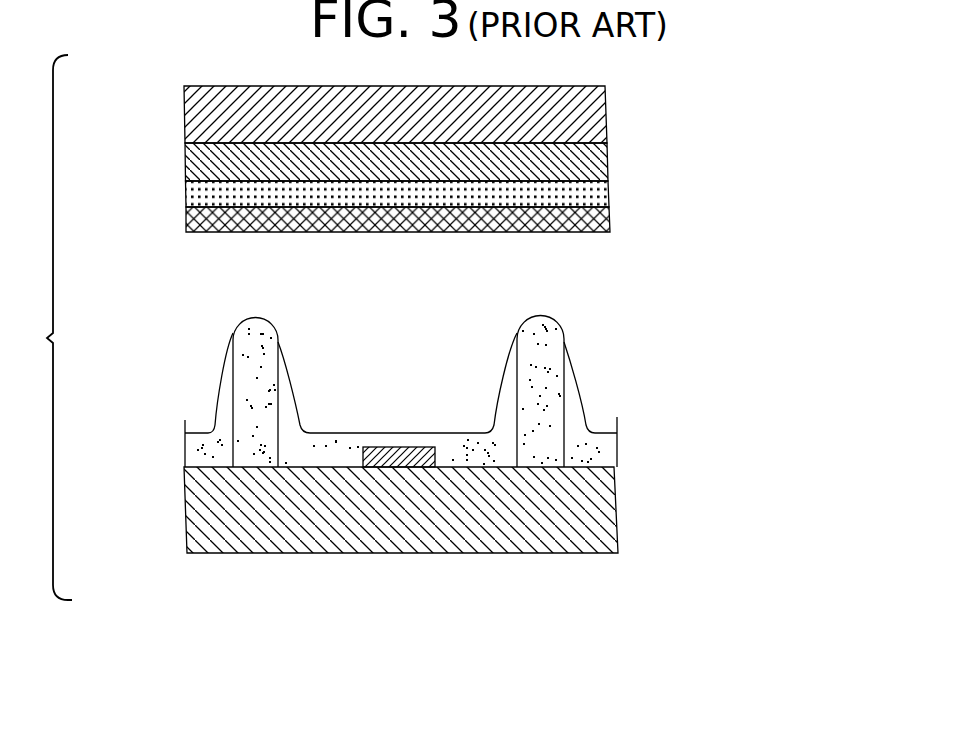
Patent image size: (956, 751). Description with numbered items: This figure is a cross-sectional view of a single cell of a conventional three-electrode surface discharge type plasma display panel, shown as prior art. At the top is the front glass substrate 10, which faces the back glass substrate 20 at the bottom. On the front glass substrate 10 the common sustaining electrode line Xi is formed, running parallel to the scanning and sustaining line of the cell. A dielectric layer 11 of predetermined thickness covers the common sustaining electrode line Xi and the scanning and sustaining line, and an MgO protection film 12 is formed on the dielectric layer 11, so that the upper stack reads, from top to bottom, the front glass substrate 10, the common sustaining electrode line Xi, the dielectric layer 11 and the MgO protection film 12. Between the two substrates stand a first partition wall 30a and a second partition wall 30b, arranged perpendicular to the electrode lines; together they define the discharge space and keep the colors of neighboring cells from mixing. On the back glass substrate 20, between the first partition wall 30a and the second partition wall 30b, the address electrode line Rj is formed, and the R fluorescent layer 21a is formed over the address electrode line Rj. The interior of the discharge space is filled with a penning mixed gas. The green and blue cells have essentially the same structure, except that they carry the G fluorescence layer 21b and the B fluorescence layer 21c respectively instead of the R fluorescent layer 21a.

The front glass substrate 10 is at (587, 112).
The common sustaining electrode line Xi is at (598, 152).
The dielectric layer 11 is at (606, 188).
The MgO protection film 12 is at (609, 217).
The back glass substrate 20 is at (608, 513).
The R fluorescent layer 21a is at (335, 435).
The G fluorescence layer 21b is at (573, 412).
The B fluorescence layer 21c is at (215, 418).
The first partition wall 30a is at (233, 333).
The second partition wall 30b is at (545, 328).
The address electrode line Rj is at (402, 433).